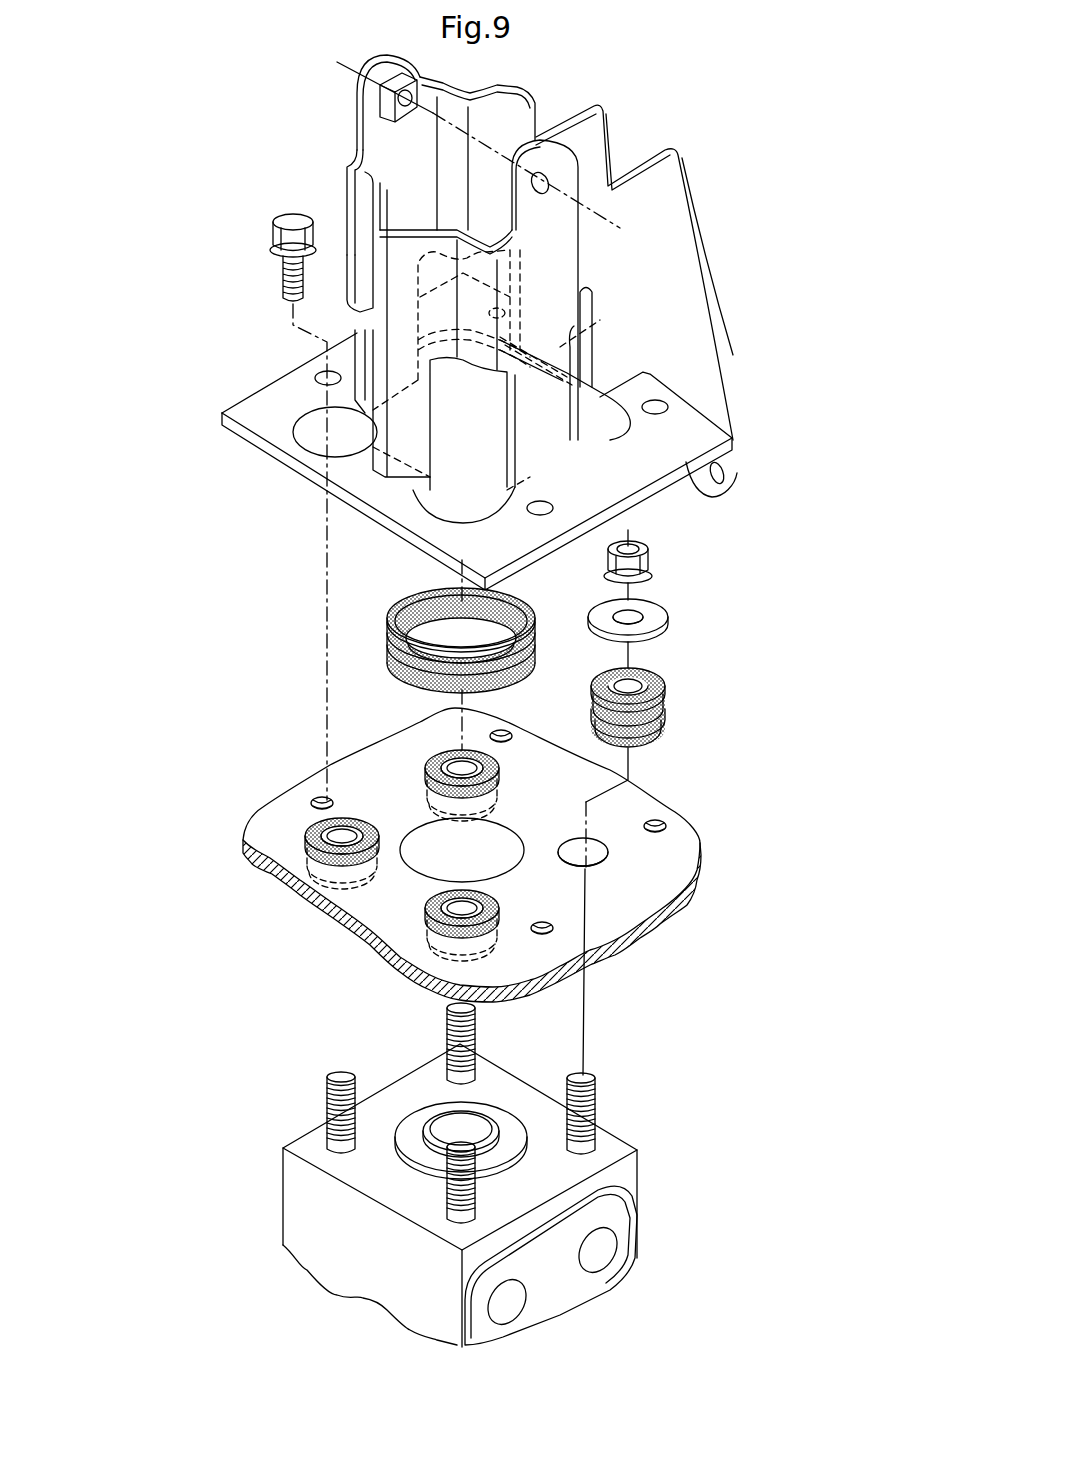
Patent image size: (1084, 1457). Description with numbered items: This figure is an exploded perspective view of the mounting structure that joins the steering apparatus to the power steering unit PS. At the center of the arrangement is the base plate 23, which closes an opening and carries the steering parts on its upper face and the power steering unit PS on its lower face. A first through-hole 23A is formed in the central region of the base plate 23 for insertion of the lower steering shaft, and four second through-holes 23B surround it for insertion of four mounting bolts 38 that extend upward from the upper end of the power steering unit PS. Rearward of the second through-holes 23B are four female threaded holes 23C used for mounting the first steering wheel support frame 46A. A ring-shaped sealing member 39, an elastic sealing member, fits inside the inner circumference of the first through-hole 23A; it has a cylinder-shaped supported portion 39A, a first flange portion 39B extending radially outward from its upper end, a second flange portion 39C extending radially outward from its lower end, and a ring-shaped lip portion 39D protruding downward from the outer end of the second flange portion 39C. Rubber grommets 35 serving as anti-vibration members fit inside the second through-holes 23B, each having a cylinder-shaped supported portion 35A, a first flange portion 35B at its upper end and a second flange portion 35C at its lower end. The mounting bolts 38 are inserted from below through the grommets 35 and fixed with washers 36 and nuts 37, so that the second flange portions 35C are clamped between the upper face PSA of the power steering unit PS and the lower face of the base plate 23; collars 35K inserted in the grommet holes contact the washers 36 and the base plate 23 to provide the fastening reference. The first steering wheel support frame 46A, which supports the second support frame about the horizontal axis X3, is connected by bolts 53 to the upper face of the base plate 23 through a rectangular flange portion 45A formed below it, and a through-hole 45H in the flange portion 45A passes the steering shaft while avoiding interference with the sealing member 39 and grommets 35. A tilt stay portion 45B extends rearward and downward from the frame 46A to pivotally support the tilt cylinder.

The base plate 23 is at (492, 891).
The first through-hole 23A is at (410, 840).
The second through-holes 23B is at (556, 846).
The female threaded holes 23C is at (512, 733).
The grommets 35 is at (486, 799).
The supported portion 35A is at (652, 733).
The first flange portion 35B is at (666, 700).
The second flange portion 35C is at (628, 750).
The collars 35K is at (648, 676).
The washers 36 is at (660, 615).
The nuts 37 is at (645, 547).
The mounting bolts 38 is at (455, 1008).
The ring-shaped sealing member 39 is at (426, 649).
The supported portion 39A is at (518, 686).
The first flange portion 39B is at (508, 602).
The second flange portion 39C is at (388, 640).
The ring-shaped lip portion 39D is at (420, 690).
The flange portion 45A is at (690, 425).
The tilt stay portion 45B is at (737, 485).
The through-hole 45H is at (345, 428).
The first steering wheel support frame 46A is at (347, 188).
The bolts 53 is at (288, 225).
The horizontal axis X3 is at (496, 156).
The power steering unit PS is at (283, 1200).
The upper face PSA is at (614, 1150).